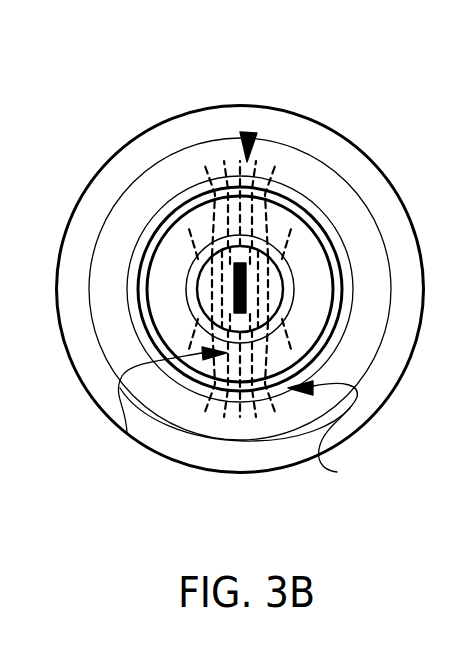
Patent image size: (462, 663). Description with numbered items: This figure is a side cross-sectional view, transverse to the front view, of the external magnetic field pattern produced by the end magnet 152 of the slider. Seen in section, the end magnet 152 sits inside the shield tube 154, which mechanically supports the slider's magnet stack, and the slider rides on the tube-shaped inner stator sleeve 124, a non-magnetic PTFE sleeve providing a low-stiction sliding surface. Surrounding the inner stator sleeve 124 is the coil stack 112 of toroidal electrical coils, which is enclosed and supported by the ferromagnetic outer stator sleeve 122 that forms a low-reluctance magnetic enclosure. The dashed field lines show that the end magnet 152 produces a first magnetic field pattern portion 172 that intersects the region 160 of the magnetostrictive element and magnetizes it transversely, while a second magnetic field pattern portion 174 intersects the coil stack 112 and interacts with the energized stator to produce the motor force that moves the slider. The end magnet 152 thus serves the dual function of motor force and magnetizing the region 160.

The coil stack 112 is at (155, 163).
The outer stator sleeve 122 is at (121, 152).
The inner stator sleeve 124 is at (190, 188).
The end magnet 152 is at (289, 203).
The shield tube 154 is at (293, 273).
The region of the magnetostrictive element 160 is at (235, 287).
The first magnetic field pattern portion 172 is at (127, 433).
The second magnetic field pattern portion 174 is at (250, 133).